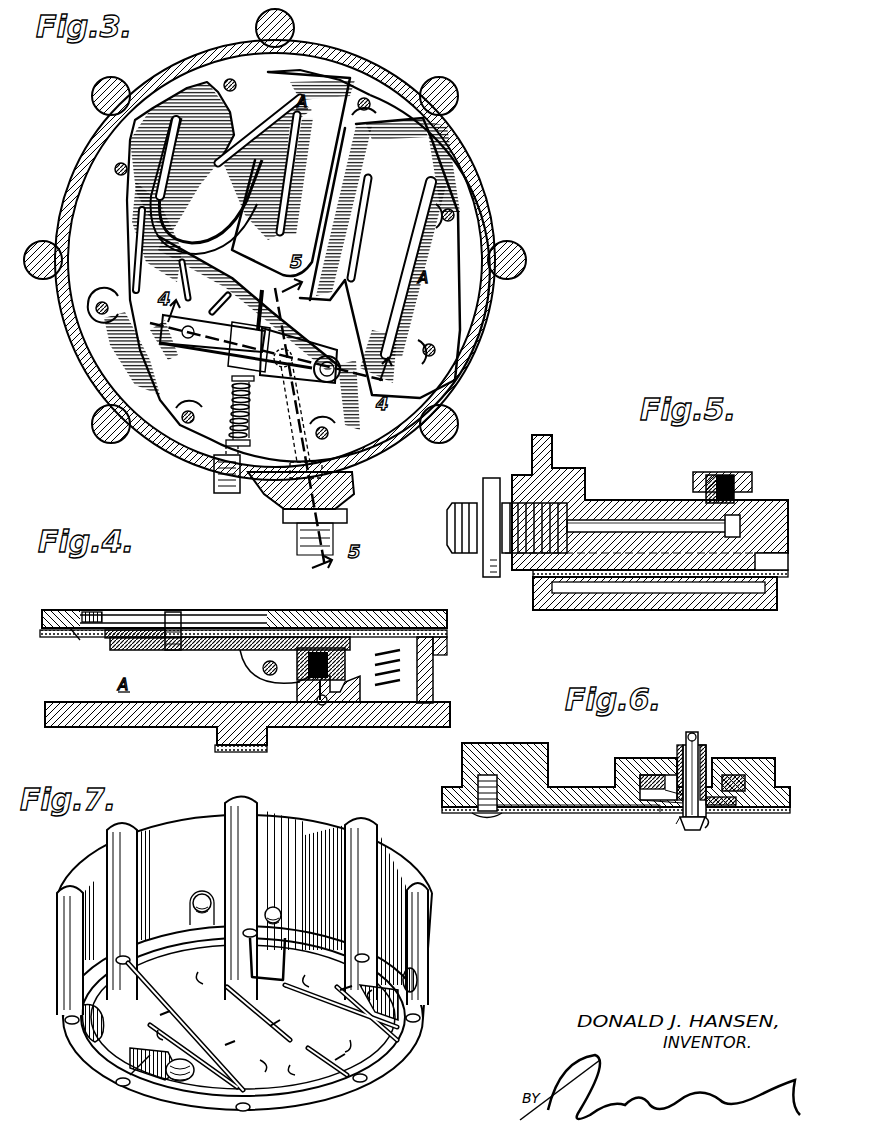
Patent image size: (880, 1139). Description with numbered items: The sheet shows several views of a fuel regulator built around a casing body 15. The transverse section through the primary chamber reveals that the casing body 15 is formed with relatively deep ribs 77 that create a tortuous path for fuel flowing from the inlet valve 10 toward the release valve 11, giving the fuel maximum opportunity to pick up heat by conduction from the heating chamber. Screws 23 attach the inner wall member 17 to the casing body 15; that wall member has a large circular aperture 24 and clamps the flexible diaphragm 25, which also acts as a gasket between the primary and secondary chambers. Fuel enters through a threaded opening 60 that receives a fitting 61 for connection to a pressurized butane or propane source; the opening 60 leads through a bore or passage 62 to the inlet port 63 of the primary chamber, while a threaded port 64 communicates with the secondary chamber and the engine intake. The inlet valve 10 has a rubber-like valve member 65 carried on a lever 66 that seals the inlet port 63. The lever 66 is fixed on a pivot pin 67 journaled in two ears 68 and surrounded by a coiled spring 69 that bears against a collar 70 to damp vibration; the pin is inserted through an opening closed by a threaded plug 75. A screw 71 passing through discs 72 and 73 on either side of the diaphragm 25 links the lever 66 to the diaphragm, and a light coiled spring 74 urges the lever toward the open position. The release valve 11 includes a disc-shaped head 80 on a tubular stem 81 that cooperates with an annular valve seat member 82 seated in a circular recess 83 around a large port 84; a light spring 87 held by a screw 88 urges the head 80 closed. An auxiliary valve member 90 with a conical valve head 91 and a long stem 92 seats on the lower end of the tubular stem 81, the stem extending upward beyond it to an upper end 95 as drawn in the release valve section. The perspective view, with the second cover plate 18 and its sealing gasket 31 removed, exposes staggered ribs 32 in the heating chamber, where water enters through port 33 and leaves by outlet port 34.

In FIG. 3, the inlet valve 10 is at (333, 355).
In FIG. 4, the inlet valve 10 is at (312, 648).
In FIG. 5, the inlet valve 10 is at (734, 475).
In FIG. 6, the release valve 11 is at (678, 824).
In FIG. 3, the casing body 15 is at (482, 184).
In FIG. 4, the casing body 15 is at (95, 728).
In FIG. 5, the casing body 15 is at (552, 445).
In FIG. 7, the casing body 15 is at (100, 1068).
In FIG. 4, the inner wall member 17 is at (50, 596).
In FIG. 6, the inner wall member 17 is at (592, 772).
In FIG. 5, the second cover plate 18 is at (690, 610).
In FIG. 3, the screws 23 is at (121, 176).
In FIG. 4, the circular aperture 24 is at (90, 610).
In FIG. 4, the flexible diaphragm 25 is at (70, 640).
In FIG. 4, the sealing gasket 31 is at (215, 747).
In FIG. 5, the sealing gasket 31 is at (765, 570).
In FIG. 7, the staggered ribs 32 is at (258, 1003).
In FIG. 7, the port 33 is at (417, 984).
In FIG. 7, the outlet port 34 is at (178, 1082).
In FIG. 3, the threaded opening 60 is at (290, 514).
In FIG. 5, the threaded opening 60 is at (512, 503).
In FIG. 3, the fitting 61 is at (347, 516).
In FIG. 5, the fitting 61 is at (483, 490).
In FIG. 3, the bore or passage 62 is at (308, 440).
In FIG. 4, the bore or passage 62 is at (320, 700).
In FIG. 5, the bore or passage 62 is at (615, 520).
In FIG. 3, the inlet port 63 is at (287, 340).
In FIG. 4, the inlet port 63 is at (324, 706).
In FIG. 5, the inlet port 63 is at (738, 515).
In FIG. 7, the port 64 is at (202, 894).
In FIG. 4, the rubber-like valve member 65 is at (330, 650).
In FIG. 5, the rubber-like valve member 65 is at (706, 490).
In FIG. 3, the lever 66 is at (222, 345).
In FIG. 4, the lever 66 is at (210, 650).
In FIG. 5, the lever 66 is at (705, 472).
In FIG. 3, the pivot pin 67 is at (258, 292).
In FIG. 4, the pivot pin 67 is at (263, 670).
In FIG. 3, the ears 68 is at (249, 347).
In FIG. 4, the ears 68 is at (250, 688).
In FIG. 3, the coiled spring 69 is at (250, 432).
In FIG. 3, the collar or flange 70 is at (252, 382).
In FIG. 3, the screw 71 is at (188, 338).
In FIG. 4, the screw 71 is at (176, 612).
In FIG. 4, the disc 72 is at (128, 626).
In FIG. 4, the disc 73 is at (110, 640).
In FIG. 4, the light coiled spring 74 is at (400, 668).
In FIG. 3, the threaded plug 75 is at (230, 493).
In FIG. 3, the deep ribs 77 is at (246, 206).
In FIG. 4, the deep ribs 77 is at (433, 655).
In FIG. 6, the disc-shaped head 80 is at (728, 805).
In FIG. 6, the tubular stem 81 is at (706, 750).
In FIG. 6, the annular valve seat member 82 is at (740, 775).
In FIG. 6, the circular recess 83 is at (650, 805).
In FIG. 6, the port 84 is at (660, 775).
In FIG. 6, the light spring 87 is at (550, 810).
In FIG. 6, the screw 88 is at (487, 822).
In FIG. 6, the auxiliary valve member 90 is at (692, 830).
In FIG. 6, the conical valve head 91 is at (708, 826).
In FIG. 6, the stem 92 is at (686, 740).
In FIG. 6, the valve tip 95 is at (694, 733).